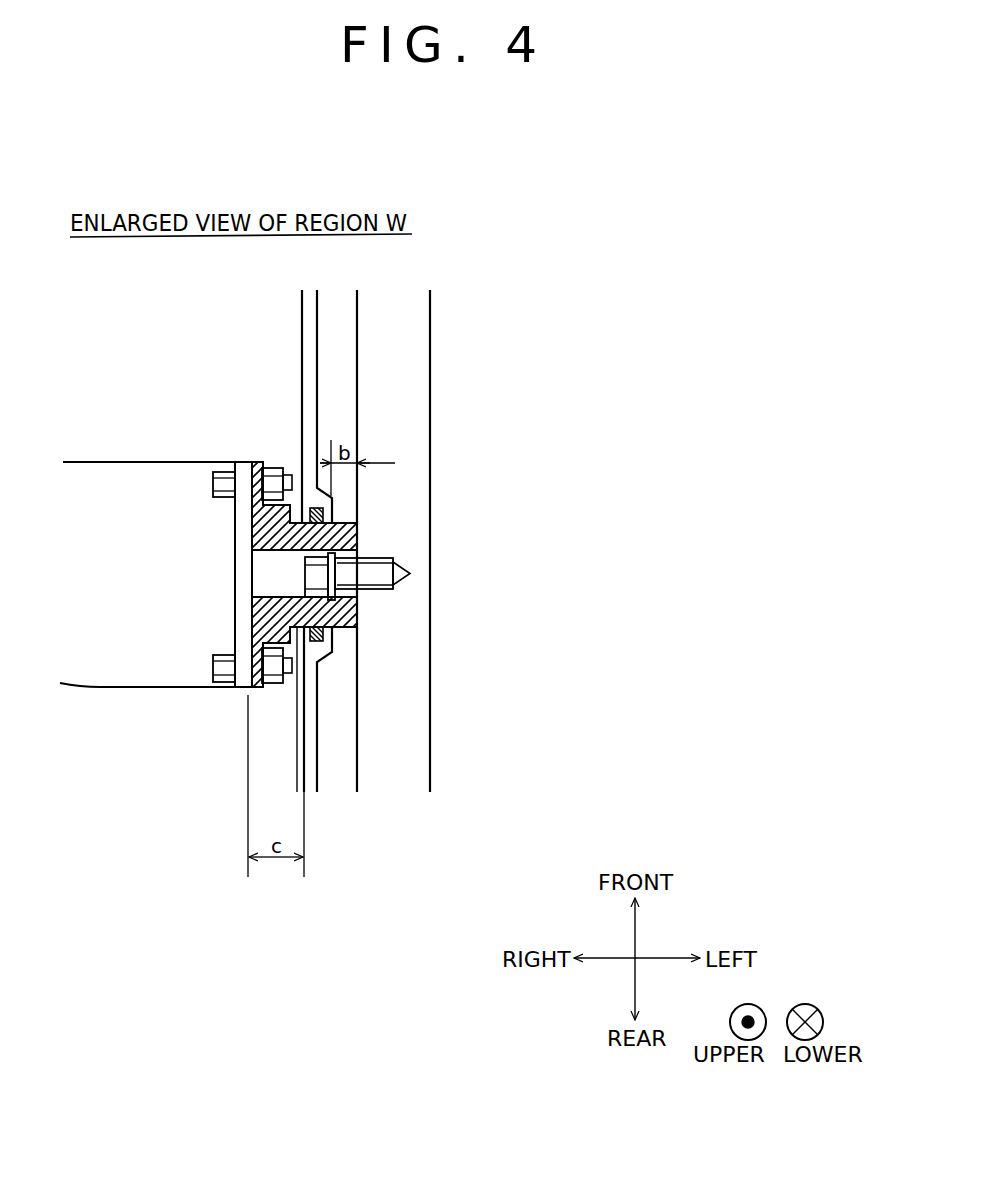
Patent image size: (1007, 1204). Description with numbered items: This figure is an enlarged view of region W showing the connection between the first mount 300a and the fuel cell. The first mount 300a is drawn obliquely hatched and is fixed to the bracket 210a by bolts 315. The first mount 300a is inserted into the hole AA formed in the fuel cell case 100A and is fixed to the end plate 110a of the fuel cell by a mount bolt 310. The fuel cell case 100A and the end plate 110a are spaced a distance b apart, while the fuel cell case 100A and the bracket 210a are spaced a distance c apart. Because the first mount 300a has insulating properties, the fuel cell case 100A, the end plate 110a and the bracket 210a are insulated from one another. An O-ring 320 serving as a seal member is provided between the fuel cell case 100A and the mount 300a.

The fuel cell case 100A is at (303, 350).
The end plate 110a is at (412, 385).
The hole AA is at (297, 512).
The bracket 210a is at (235, 518).
The first mount 300a is at (260, 537).
The mount bolt 310 is at (383, 580).
The bolts 315 is at (273, 470).
The O-ring 320 is at (317, 641).